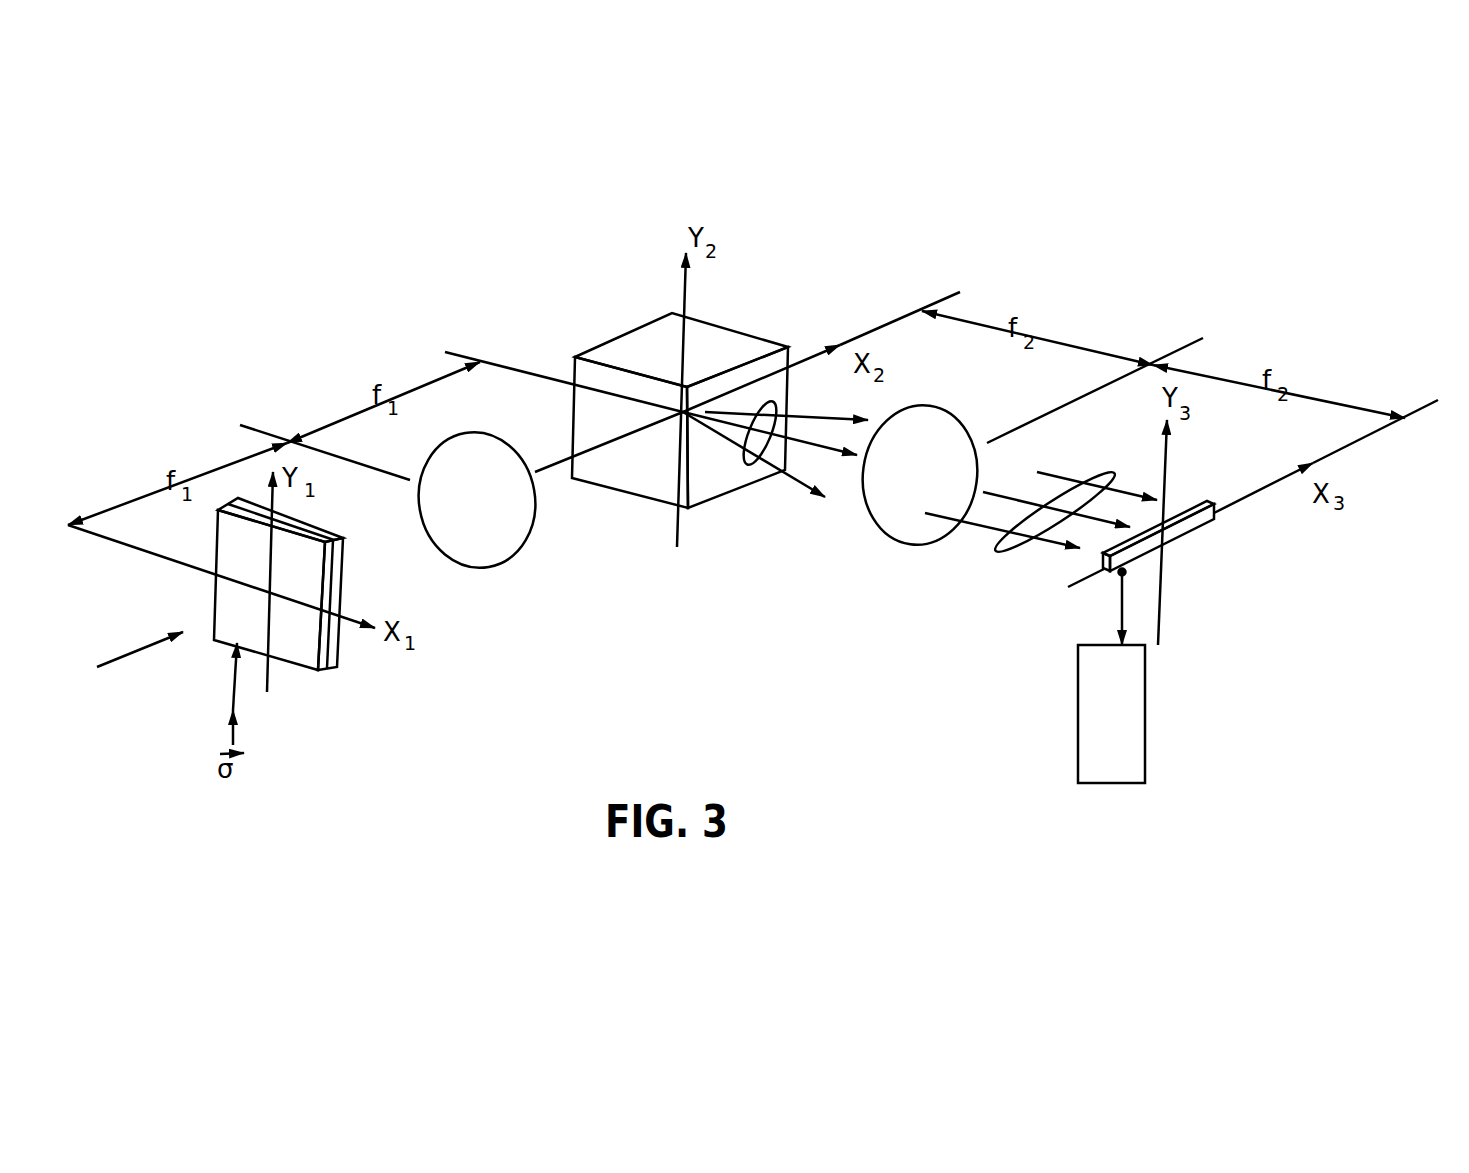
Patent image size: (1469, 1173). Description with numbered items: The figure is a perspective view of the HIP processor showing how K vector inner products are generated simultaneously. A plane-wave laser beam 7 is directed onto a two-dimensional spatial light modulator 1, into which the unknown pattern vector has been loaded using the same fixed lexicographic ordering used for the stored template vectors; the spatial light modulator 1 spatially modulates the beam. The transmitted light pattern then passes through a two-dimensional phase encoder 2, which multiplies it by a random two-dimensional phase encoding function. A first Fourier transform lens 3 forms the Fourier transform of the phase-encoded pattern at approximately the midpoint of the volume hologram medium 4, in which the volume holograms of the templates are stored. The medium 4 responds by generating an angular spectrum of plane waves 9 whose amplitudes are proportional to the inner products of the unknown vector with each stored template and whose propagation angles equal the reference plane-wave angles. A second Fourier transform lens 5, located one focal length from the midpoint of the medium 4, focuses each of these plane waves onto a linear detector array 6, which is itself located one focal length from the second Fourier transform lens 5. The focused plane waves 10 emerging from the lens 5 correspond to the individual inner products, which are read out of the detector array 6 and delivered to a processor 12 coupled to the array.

The spatial light modulator 1 is at (313, 671).
The two-dimensional phase encoder 2 is at (342, 644).
The first Fourier transform lens 3 is at (523, 553).
The volume hologram medium 4 is at (725, 332).
The second Fourier transform lens 5 is at (893, 545).
The linear detector array 6 is at (1192, 535).
The plane-wave laser beam 7 is at (137, 653).
The angular spectrum of plane waves 9 is at (748, 465).
The focused plane waves 10 is at (992, 553).
The processor 12 is at (1145, 718).